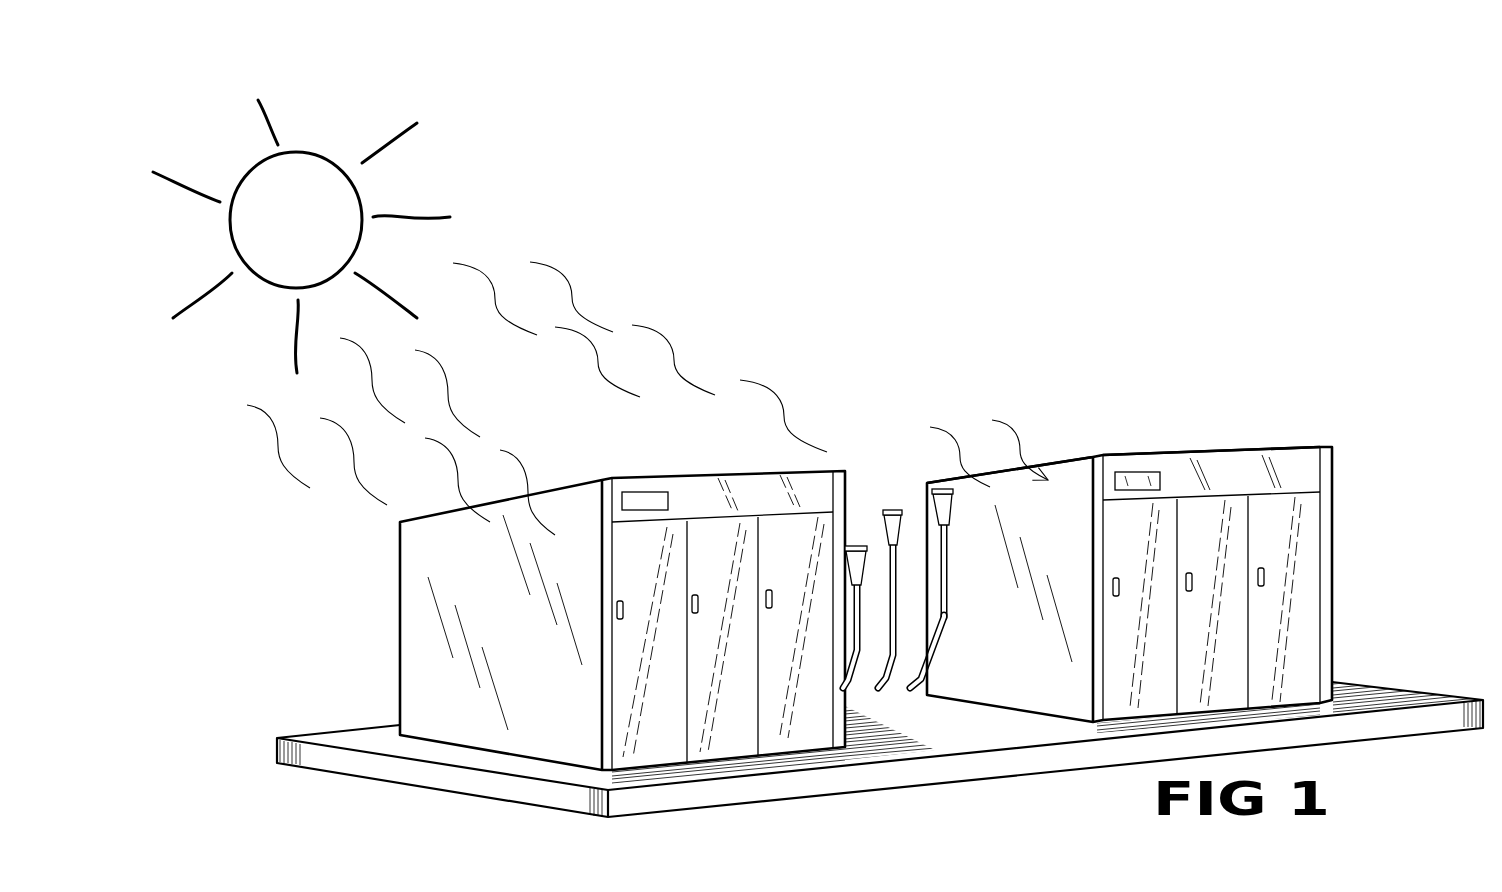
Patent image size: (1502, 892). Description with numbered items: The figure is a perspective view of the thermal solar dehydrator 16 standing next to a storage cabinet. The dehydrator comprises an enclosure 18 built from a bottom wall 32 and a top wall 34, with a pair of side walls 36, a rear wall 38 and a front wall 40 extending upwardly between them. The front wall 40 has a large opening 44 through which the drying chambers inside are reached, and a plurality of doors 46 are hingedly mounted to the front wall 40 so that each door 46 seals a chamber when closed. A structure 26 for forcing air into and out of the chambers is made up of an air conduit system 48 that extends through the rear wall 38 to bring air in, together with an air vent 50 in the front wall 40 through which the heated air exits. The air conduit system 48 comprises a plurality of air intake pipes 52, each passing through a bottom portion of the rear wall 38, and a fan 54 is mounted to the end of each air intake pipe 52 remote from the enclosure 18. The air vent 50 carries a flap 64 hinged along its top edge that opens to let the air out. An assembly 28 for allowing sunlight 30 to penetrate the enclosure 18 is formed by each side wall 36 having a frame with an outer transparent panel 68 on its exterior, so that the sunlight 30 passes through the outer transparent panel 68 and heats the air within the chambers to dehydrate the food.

The thermal solar dehydrator 16 is at (1153, 515).
The enclosure 18 is at (1153, 550).
The structure for forcing air 26 is at (939, 569).
The assembly for allowing sunlight 28 is at (1067, 486).
The sunlight 30 is at (665, 338).
The bottom wall 32 is at (1032, 708).
The top wall 34 is at (1248, 447).
The side wall 36 is at (988, 461).
The rear wall 38 is at (932, 491).
The front wall 40 is at (1313, 472).
The large opening 44 is at (1313, 567).
The door 46 is at (1313, 660).
The air conduit system 48 is at (952, 565).
The air vent 50 is at (1127, 492).
The air intake pipe 52 is at (934, 658).
The fan 54 is at (940, 512).
The flap 64 is at (1142, 473).
The outer transparent panel 68 is at (1063, 703).